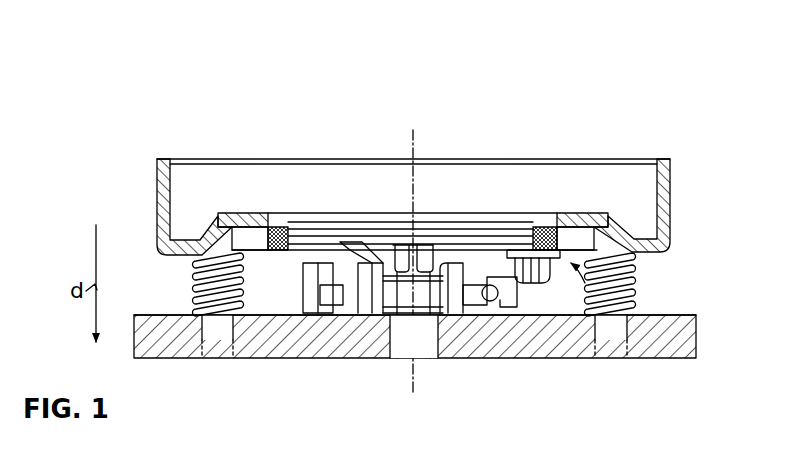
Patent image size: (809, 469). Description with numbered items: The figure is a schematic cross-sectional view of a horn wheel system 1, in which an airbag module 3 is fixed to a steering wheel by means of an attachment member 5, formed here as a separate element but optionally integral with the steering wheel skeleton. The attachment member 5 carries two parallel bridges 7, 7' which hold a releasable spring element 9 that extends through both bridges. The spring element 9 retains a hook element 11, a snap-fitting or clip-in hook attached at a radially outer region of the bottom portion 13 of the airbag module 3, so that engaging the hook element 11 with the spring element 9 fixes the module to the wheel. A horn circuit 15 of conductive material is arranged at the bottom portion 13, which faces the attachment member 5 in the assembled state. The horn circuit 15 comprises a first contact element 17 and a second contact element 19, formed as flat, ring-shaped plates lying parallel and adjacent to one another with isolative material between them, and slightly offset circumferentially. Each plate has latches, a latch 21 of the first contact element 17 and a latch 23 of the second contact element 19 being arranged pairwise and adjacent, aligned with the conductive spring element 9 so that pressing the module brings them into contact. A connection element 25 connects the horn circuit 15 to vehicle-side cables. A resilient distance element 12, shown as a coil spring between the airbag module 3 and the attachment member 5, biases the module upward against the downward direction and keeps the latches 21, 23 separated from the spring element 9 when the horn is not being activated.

The horn wheel system 1 is at (715, 119).
The airbag module 3 is at (517, 175).
The attachment member 5 is at (282, 345).
The bridge 7 is at (478, 353).
The bridge 7' is at (373, 358).
The spring element 9 is at (403, 288).
The hook element 11 is at (397, 307).
The resilient distance element 12 is at (190, 290).
The bottom portion 13 is at (617, 288).
The horn circuit 15 is at (346, 209).
The first contact element 17 is at (381, 234).
The second contact element 19 is at (430, 263).
The latch 21 is at (394, 263).
The latch 23 is at (443, 245).
The connection element 25 is at (350, 260).